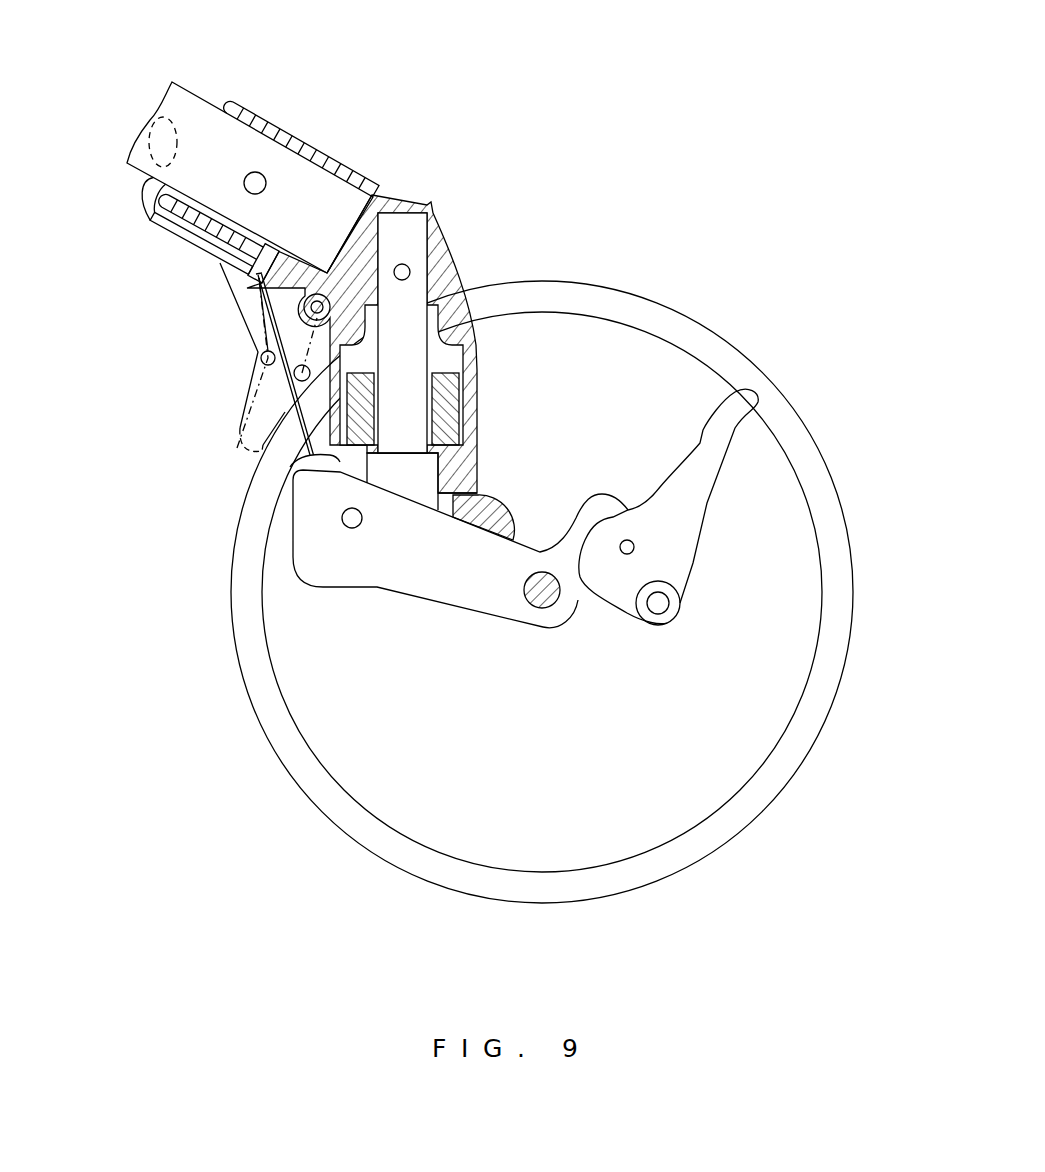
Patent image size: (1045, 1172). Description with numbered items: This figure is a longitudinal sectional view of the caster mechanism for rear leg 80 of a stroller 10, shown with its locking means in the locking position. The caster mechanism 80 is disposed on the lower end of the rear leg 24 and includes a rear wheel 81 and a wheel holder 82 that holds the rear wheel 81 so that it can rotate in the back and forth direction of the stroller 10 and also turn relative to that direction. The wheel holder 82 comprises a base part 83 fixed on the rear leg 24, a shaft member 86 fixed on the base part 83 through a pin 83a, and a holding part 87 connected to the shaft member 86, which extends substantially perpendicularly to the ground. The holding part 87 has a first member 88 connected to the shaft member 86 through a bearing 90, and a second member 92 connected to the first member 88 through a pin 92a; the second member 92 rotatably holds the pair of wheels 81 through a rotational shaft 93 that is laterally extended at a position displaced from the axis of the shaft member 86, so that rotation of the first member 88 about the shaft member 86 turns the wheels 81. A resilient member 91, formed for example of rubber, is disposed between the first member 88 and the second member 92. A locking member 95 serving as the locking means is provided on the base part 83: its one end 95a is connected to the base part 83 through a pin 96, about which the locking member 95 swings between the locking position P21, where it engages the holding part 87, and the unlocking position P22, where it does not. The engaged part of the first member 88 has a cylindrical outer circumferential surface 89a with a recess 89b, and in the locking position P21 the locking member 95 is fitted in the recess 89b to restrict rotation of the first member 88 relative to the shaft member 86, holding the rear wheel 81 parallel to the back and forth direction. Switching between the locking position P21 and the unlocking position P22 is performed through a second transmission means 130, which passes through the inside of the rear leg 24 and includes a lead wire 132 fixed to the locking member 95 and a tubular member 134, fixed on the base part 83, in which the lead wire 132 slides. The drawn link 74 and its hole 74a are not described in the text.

The stroller 10 is at (828, 113).
The rear leg 24 is at (202, 110).
The link 74 is at (687, 503).
The link hole 74a is at (634, 547).
The caster mechanism for rear leg 80 is at (620, 125).
The rear wheel 81 is at (408, 860).
The wheel holder 82 is at (447, 186).
The base part 83 is at (392, 197).
The pin 83a is at (408, 268).
The shaft member 86 is at (413, 290).
The holding part 87 is at (412, 627).
The first member 88 is at (458, 392).
The cylindrical outer circumferential surface 89a is at (480, 447).
The recess 89b is at (297, 460).
The bearing 90 is at (420, 485).
The resilient member 91 is at (503, 520).
The second member 92 is at (470, 582).
The pin 92a is at (352, 528).
The rotational shaft 93 is at (539, 606).
The locking member 95 is at (293, 449).
The one end of the locking member 95a is at (267, 293).
The pin 96 is at (309, 291).
The second transmission means 130 is at (143, 210).
The lead wire 132 is at (265, 318).
The tubular member 134 is at (185, 232).
The locking position P21 is at (313, 428).
The unlocking position P22 is at (257, 407).